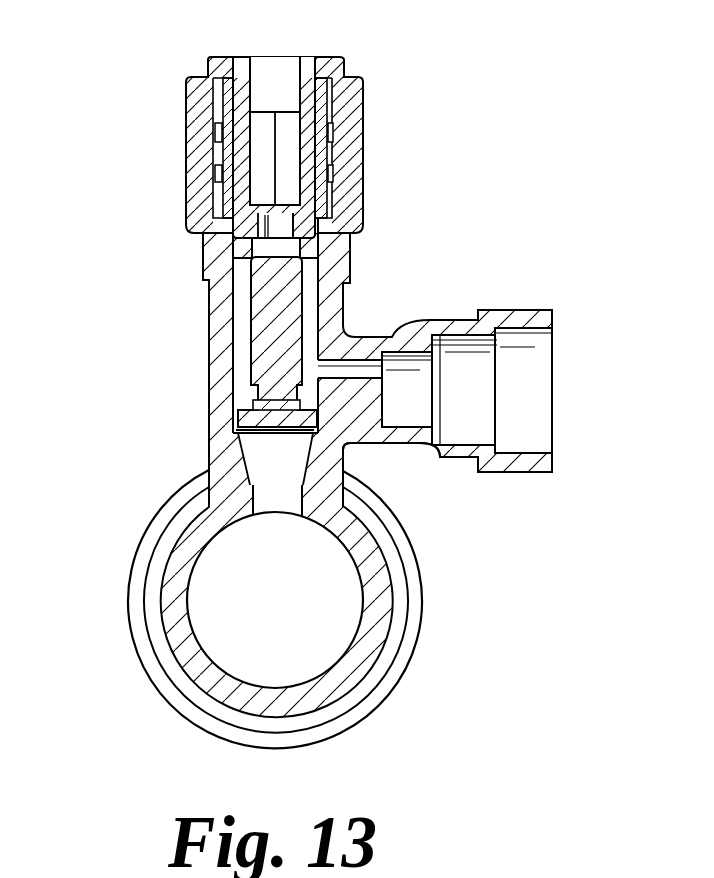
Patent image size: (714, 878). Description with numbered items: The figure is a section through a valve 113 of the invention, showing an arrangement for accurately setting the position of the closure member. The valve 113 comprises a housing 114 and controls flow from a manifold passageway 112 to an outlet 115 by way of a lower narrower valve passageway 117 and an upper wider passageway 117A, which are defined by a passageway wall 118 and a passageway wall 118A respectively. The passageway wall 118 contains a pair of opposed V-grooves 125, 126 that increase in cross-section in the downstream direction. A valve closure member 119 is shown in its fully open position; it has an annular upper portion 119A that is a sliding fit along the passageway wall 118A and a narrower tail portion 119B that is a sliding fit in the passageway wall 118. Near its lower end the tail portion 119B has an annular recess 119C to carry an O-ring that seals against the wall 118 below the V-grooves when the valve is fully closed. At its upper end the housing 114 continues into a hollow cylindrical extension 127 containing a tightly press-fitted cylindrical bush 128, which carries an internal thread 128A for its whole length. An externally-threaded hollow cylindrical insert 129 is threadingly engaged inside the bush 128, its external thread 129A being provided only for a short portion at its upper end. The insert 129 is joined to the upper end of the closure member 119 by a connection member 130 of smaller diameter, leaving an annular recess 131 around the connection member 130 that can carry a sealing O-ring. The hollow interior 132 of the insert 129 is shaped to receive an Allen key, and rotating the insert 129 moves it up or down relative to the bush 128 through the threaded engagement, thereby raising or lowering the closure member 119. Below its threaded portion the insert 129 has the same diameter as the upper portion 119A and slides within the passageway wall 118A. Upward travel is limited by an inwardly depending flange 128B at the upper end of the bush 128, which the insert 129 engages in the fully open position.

The manifold passageway 112 is at (312, 607).
The valve 113 is at (360, 261).
The housing 114 is at (206, 357).
The outlet 115 is at (523, 385).
The lower narrower valve passageway 117 is at (288, 490).
The upper wider passageway 117A is at (232, 352).
The passageway wall 118 is at (207, 540).
The passageway wall 118A is at (208, 298).
The valve closure member 119 is at (248, 372).
The annular upper portion 119A is at (216, 276).
The tail portion 119B is at (320, 300).
The annular recess 119C is at (236, 390).
The V-groove 125 is at (346, 466).
The V-groove 126 is at (238, 446).
The hollow cylindrical extension 127 is at (363, 160).
The internally-threaded cylindrical bush 128 is at (205, 150).
The internal thread 128A is at (190, 180).
The inwardly depending flange 128B is at (346, 60).
The externally-threaded hollow cylindrical insert 129 is at (260, 122).
The external thread 129A is at (200, 110).
The connection member 130 is at (250, 230).
The annular recess 131 is at (307, 238).
The hollow interior 132 is at (286, 96).